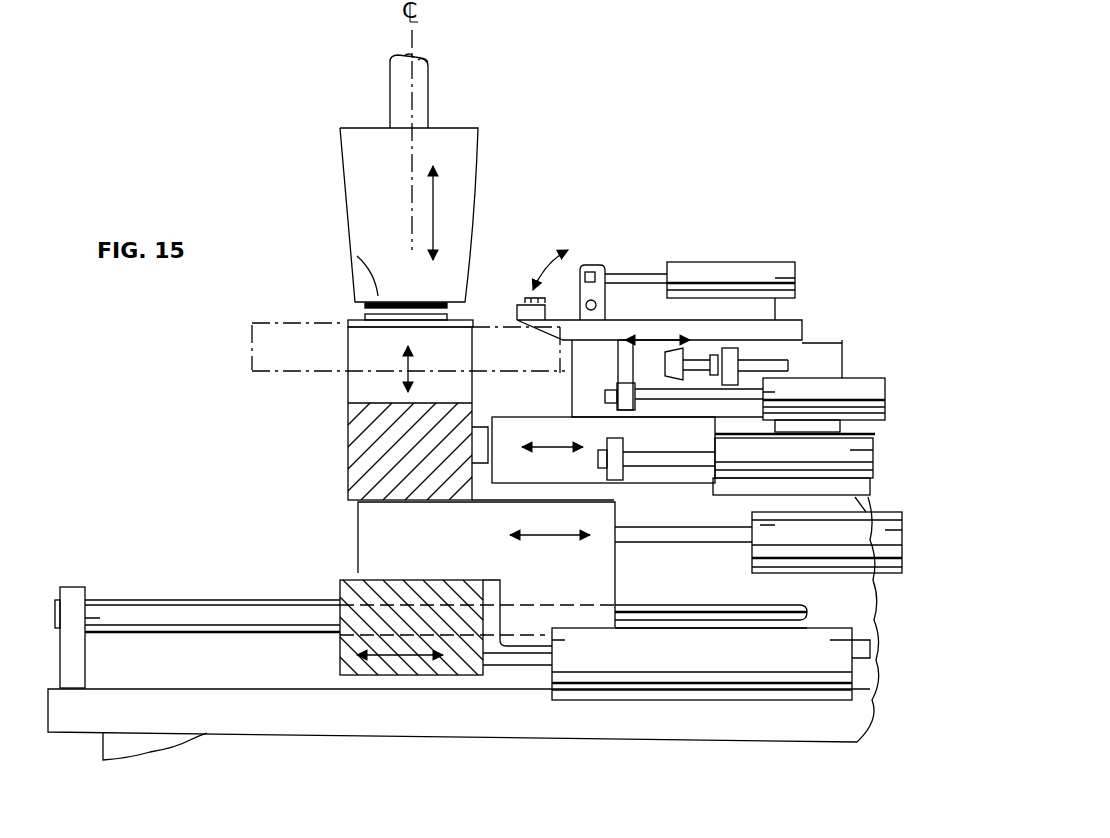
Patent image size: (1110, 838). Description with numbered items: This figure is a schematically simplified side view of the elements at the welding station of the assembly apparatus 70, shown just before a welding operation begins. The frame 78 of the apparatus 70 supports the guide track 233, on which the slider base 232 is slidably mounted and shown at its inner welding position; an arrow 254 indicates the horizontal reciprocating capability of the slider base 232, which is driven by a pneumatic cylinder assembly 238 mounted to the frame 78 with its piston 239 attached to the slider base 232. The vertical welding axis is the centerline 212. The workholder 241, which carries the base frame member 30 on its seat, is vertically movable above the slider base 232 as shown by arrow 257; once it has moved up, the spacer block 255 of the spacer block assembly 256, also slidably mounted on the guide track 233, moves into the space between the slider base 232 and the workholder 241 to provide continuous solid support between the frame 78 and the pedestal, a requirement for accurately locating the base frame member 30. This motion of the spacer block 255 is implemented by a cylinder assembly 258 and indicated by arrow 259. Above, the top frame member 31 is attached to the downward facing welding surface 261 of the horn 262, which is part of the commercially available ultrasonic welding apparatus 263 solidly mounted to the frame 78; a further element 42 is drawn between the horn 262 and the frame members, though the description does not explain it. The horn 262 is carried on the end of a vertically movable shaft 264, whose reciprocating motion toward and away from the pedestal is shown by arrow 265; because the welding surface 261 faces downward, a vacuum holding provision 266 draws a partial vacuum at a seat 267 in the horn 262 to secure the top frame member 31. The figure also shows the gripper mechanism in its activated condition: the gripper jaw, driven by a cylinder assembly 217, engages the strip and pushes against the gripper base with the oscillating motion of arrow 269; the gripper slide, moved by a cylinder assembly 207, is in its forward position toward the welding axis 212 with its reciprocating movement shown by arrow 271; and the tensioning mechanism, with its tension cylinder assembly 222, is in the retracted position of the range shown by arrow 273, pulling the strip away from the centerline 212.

The ultrasonic welding apparatus 263 is at (481, 110).
The weld centerline 212 is at (414, 89).
The vacuum holding provision 266 is at (413, 58).
The vertically movable shaft 264 is at (428, 66).
The horn 262 is at (462, 212).
The arrow 265 is at (435, 190).
The seat 267 is at (357, 256).
The plate 42 is at (440, 302).
The top frame member 31 is at (365, 316).
The base frame member 30 is at (365, 322).
The workholder 241 is at (348, 434).
The arrow 257 is at (411, 366).
The arrow 271 is at (556, 450).
The arrow 273 is at (665, 336).
The welding surface 261 is at (517, 315).
The arrow 269 is at (550, 262).
The cylinder assembly 217 is at (735, 262).
The tension cylinder assembly 222 is at (855, 378).
The cylinder assembly 207 is at (873, 455).
The cylinder assembly 258 is at (807, 573).
The spacer block 255 is at (358, 538).
The arrow 259 is at (540, 538).
The spacer block assembly 256 is at (620, 573).
The guide track 233 is at (212, 600).
The slider base 232 is at (420, 676).
The arrow 254 is at (375, 676).
The piston 239 is at (505, 670).
The pneumatic cylinder assembly 238 is at (745, 698).
The frame 78 is at (648, 725).
The assembly apparatus 70 is at (290, 492).